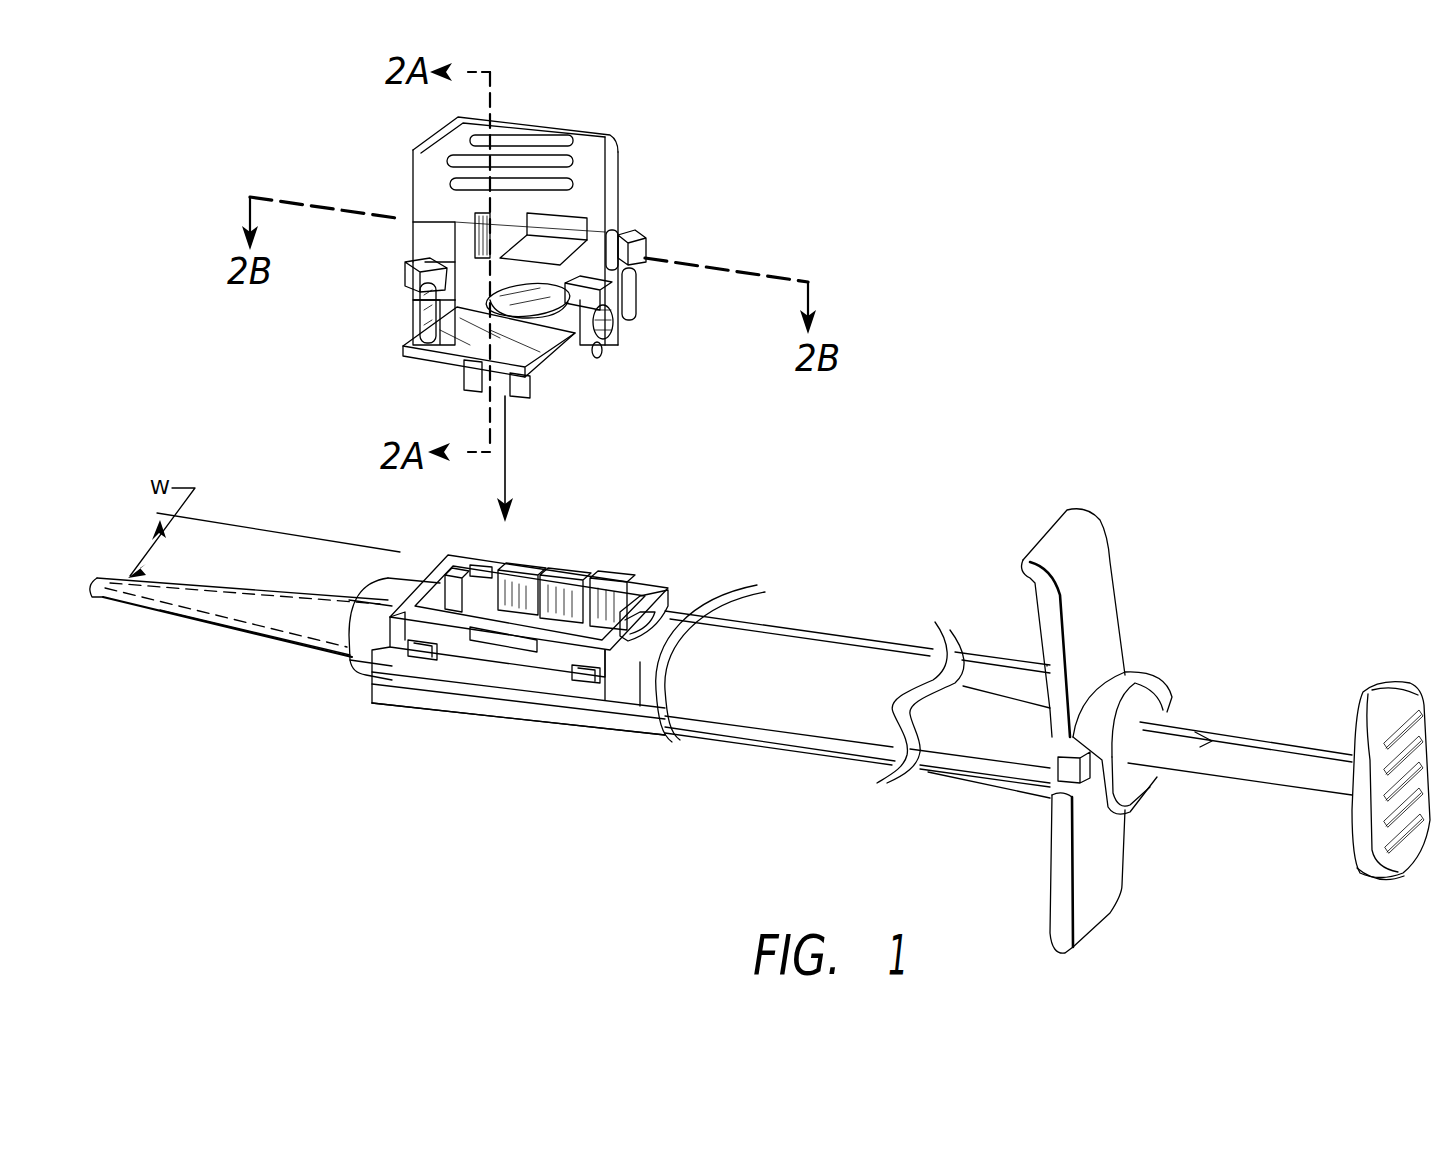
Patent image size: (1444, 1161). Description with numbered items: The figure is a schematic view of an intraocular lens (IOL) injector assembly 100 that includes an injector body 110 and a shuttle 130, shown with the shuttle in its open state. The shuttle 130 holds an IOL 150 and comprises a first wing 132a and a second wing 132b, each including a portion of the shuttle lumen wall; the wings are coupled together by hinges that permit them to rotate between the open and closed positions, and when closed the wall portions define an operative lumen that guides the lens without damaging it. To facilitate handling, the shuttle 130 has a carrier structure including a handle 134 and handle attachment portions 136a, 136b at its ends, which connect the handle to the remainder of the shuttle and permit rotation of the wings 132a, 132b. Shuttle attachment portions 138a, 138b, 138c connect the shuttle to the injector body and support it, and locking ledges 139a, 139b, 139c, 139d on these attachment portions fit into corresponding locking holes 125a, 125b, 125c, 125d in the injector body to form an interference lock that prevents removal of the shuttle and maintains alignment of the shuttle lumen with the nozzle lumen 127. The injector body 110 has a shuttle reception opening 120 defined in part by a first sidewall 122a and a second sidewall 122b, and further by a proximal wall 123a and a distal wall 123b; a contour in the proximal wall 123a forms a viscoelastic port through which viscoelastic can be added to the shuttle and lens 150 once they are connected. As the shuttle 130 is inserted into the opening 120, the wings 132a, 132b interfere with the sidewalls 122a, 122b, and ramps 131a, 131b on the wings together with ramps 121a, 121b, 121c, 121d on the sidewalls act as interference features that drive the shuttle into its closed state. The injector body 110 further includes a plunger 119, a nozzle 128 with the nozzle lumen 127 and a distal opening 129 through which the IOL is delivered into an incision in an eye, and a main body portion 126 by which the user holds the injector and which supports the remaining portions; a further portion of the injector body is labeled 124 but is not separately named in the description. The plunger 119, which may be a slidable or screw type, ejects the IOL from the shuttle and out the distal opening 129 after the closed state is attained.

The intraocular lens (IOL) injector assembly 100 is at (1018, 264).
The injector body 110 is at (804, 624).
The plunger 119 is at (1215, 732).
The shuttle reception opening 120 is at (513, 562).
The ramp 121a is at (490, 622).
The ramp 121b is at (505, 622).
The ramp 121c is at (582, 578).
The ramp 121d is at (636, 580).
The first sidewall 122a is at (468, 652).
The second sidewall 122b is at (520, 585).
The proximal wall 123a is at (448, 578).
The distal wall 123b is at (635, 636).
The barrel 124 is at (688, 617).
The locking hole 125a is at (408, 652).
The locking hole 125b is at (586, 684).
The locking hole 125c is at (632, 605).
The locking hole 125d is at (487, 585).
The main body portion 126 is at (565, 735).
The nozzle lumen 127 is at (157, 613).
The nozzle 128 is at (160, 610).
The distal opening 129 is at (90, 597).
The shuttle 130 is at (686, 192).
The ramp 131a is at (467, 388).
The ramp 131b is at (520, 397).
The first wing 132a is at (410, 355).
The second wing 132b is at (555, 243).
The handle 134 is at (578, 130).
The handle attachment portion 136a is at (405, 312).
The handle attachment portion 136b is at (620, 355).
The shuttle attachment portion 138a is at (410, 262).
The shuttle attachment portion 138b is at (613, 293).
The shuttle attachment portion 138c is at (640, 238).
The locking ledge 139a is at (410, 297).
The locking ledge 139b is at (625, 333).
The locking ledge 139c is at (645, 272).
The locking ledge 139d is at (490, 233).
The IOL 150 is at (617, 357).